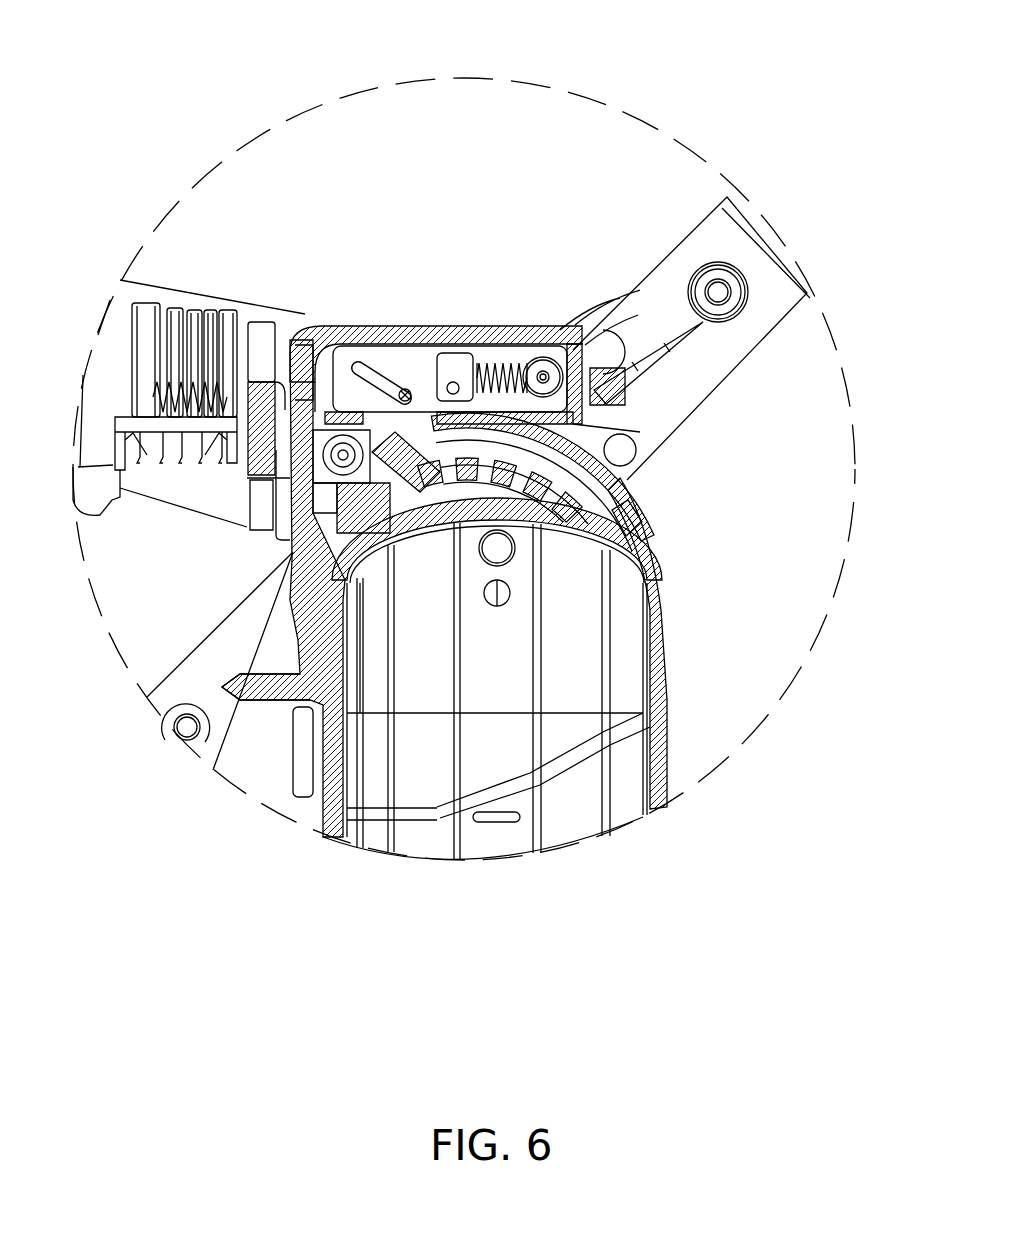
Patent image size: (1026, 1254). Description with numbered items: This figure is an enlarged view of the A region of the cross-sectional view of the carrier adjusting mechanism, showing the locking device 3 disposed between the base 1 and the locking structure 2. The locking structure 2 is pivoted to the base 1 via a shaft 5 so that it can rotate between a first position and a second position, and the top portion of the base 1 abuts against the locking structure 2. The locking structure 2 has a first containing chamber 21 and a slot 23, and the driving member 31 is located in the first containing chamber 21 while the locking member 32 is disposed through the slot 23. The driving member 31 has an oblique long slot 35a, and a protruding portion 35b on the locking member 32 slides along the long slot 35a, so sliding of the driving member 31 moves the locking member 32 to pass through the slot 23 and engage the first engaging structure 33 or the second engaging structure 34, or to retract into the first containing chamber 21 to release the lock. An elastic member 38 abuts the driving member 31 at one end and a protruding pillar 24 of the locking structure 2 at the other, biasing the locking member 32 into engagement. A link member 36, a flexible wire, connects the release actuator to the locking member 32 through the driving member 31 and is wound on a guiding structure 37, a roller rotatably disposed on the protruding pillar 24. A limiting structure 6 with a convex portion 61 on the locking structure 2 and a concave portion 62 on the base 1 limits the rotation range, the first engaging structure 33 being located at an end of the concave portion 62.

The base 1 is at (667, 792).
The locking structure 2 is at (250, 400).
The locking device 3 is at (705, 62).
The shaft 5 is at (500, 547).
The limiting structure 6 is at (33, 548).
The first containing chamber 21 is at (572, 420).
The slot 23 is at (470, 434).
The protruding pillar 24 is at (593, 307).
The driving member 31 is at (463, 365).
The locking member 32 is at (313, 338).
The first engaging structure 33 is at (435, 455).
The second engaging structure 34 is at (562, 470).
The long slot 35a is at (372, 372).
The protruding portion 35b is at (405, 393).
The link member 36 is at (618, 357).
The guiding structure 37 is at (553, 343).
The elastic member 38 is at (512, 355).
The convex portion 61 is at (293, 552).
The concave portion 62 is at (293, 552).
The A region A is at (283, 820).